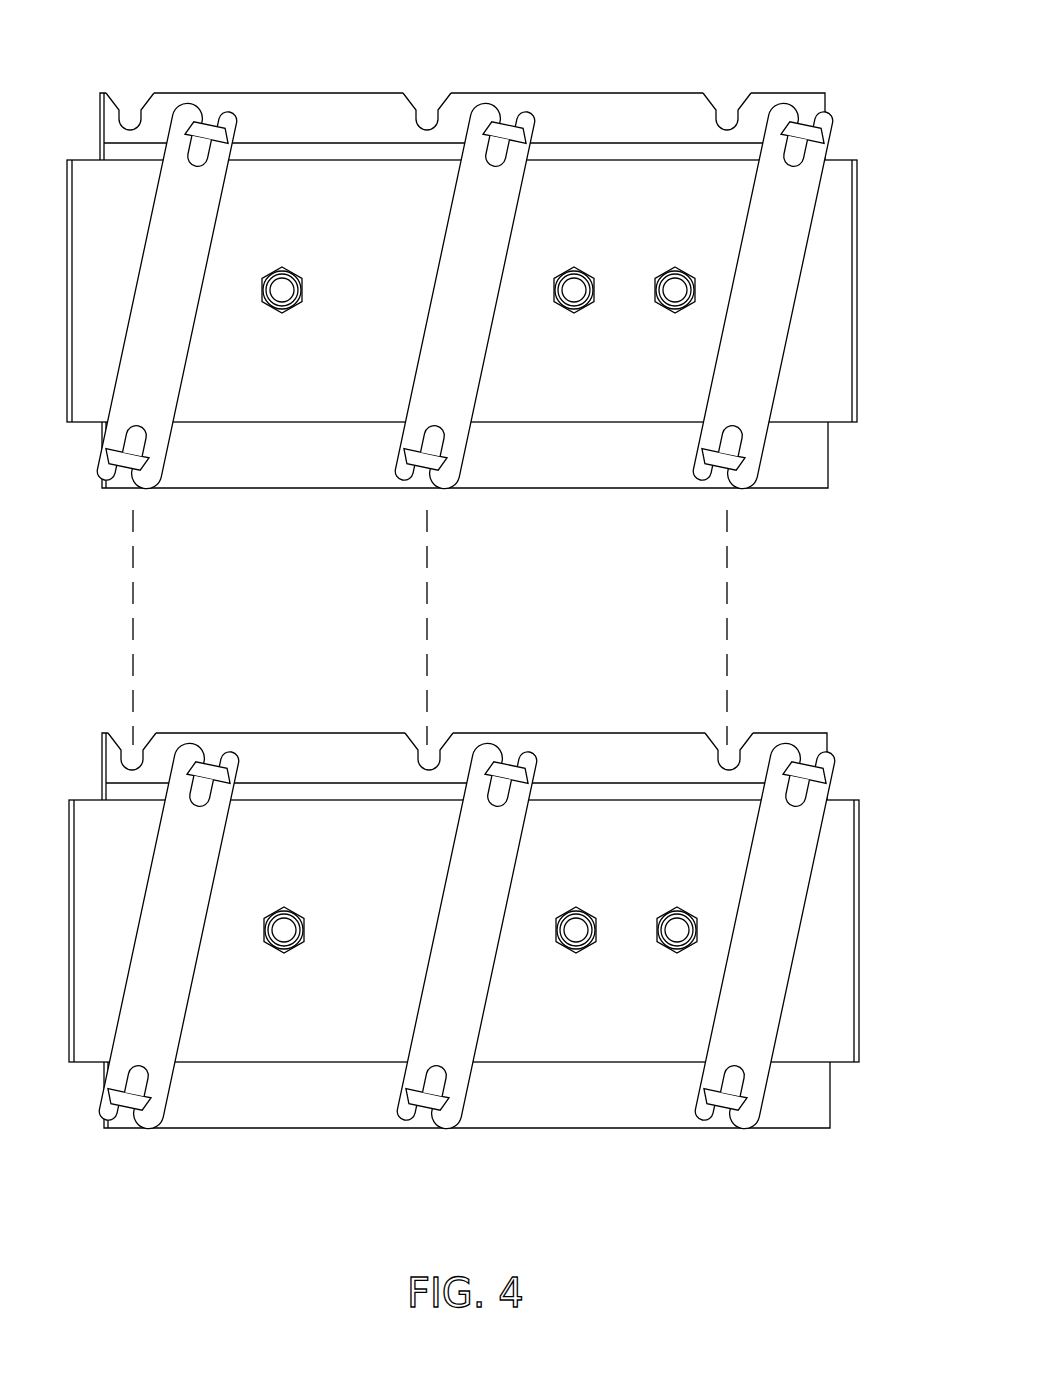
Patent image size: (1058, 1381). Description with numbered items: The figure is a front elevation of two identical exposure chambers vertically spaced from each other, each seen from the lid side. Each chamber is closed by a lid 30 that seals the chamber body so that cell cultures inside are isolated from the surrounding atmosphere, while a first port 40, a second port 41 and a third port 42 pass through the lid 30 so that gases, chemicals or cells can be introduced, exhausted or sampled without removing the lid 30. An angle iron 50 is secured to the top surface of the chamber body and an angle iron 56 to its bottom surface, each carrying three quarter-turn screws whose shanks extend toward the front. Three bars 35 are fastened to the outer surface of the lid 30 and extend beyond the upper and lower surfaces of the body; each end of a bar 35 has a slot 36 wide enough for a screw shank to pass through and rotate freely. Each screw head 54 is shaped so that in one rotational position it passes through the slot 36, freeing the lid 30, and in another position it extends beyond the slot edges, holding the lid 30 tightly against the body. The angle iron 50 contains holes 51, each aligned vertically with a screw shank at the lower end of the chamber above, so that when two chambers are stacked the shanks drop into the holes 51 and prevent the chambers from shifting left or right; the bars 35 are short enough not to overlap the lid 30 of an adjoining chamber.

The lid 30 is at (857, 302).
The bar 35 is at (190, 355).
The slot 36 is at (830, 148).
The first port 40 is at (297, 256).
The second port 41 is at (592, 254).
The third port 42 is at (692, 254).
The angle iron 50 is at (337, 92).
The hole 51 is at (133, 113).
The screw head 54 is at (153, 455).
The angle iron 56 is at (803, 490).